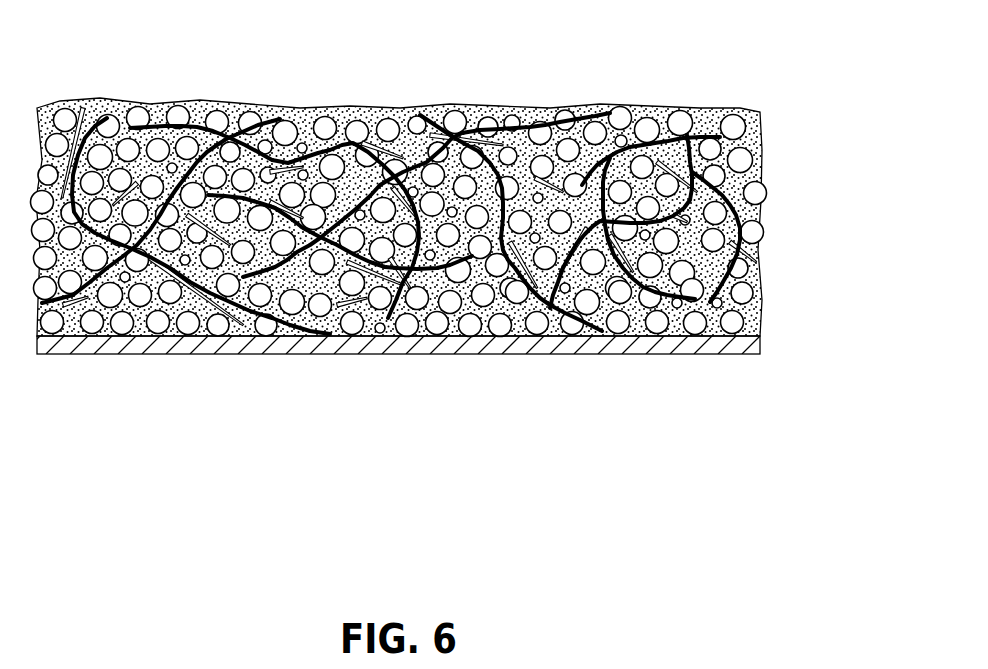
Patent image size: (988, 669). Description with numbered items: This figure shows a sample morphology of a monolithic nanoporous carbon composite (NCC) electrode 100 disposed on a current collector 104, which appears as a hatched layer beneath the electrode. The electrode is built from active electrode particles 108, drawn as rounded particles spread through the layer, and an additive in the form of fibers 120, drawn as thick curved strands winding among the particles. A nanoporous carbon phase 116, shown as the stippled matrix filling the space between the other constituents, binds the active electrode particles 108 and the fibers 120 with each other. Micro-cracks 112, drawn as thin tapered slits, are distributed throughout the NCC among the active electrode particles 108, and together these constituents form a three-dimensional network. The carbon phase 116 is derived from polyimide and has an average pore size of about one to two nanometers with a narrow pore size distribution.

The NCC electrode 100 is at (448, 240).
The current collector 104 is at (430, 347).
The active electrode particles 108 is at (323, 127).
The micro-cracks 112 is at (83, 108).
The nanoporous carbon phase 116 is at (372, 117).
The fibers 120 is at (580, 112).